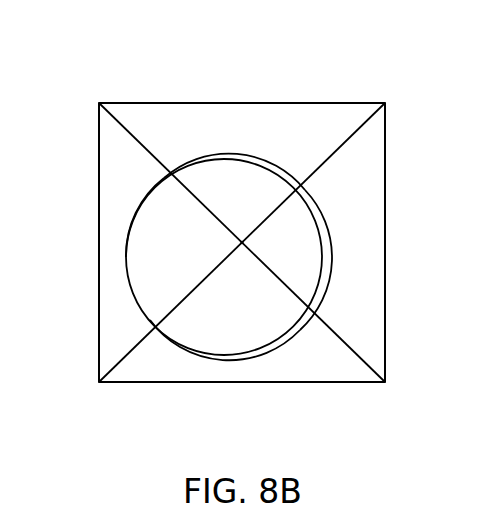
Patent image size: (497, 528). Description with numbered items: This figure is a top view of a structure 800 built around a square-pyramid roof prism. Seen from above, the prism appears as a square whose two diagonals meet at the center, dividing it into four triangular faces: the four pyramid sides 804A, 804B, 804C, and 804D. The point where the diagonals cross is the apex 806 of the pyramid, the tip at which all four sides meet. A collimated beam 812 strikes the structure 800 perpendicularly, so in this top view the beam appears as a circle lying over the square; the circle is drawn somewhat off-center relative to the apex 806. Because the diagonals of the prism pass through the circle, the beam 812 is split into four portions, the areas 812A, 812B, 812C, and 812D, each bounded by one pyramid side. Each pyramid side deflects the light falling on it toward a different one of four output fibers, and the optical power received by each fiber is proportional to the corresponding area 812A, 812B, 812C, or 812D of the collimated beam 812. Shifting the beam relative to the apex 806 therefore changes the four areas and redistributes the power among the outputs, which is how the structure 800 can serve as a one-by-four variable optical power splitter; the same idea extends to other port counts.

The structure 800 is at (169, 58).
The pyramid side 804A is at (245, 102).
The pyramid side 804B is at (385, 308).
The pyramid side 804C is at (315, 382).
The pyramid side 804D is at (99, 230).
The apex 806 is at (243, 240).
The collimated beam 812 is at (243, 240).
The area of collimated beam 812A is at (201, 250).
The area of collimated beam 812B is at (265, 200).
The area of collimated beam 812C is at (320, 268).
The area of collimated beam 812D is at (255, 320).